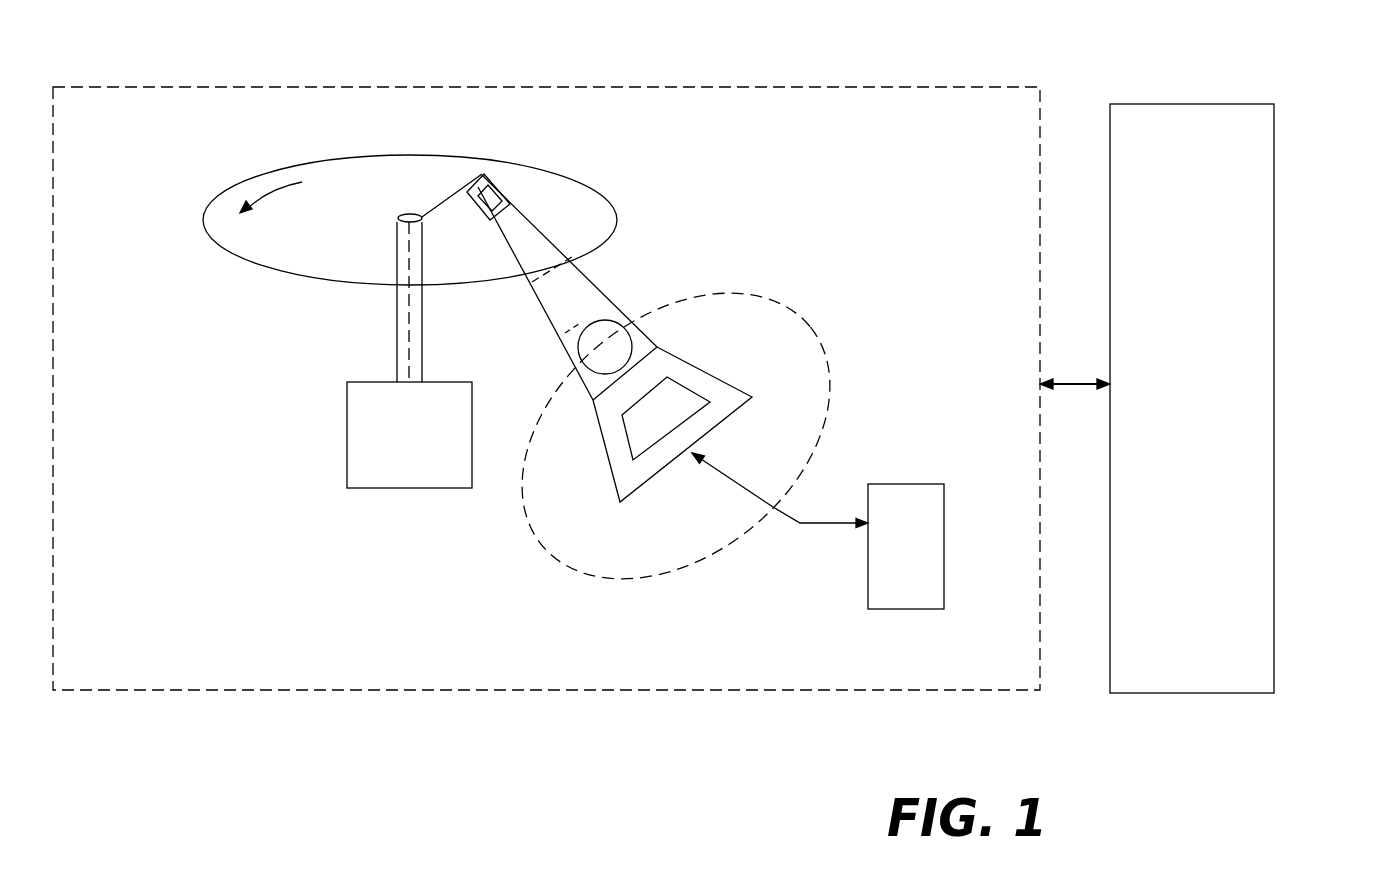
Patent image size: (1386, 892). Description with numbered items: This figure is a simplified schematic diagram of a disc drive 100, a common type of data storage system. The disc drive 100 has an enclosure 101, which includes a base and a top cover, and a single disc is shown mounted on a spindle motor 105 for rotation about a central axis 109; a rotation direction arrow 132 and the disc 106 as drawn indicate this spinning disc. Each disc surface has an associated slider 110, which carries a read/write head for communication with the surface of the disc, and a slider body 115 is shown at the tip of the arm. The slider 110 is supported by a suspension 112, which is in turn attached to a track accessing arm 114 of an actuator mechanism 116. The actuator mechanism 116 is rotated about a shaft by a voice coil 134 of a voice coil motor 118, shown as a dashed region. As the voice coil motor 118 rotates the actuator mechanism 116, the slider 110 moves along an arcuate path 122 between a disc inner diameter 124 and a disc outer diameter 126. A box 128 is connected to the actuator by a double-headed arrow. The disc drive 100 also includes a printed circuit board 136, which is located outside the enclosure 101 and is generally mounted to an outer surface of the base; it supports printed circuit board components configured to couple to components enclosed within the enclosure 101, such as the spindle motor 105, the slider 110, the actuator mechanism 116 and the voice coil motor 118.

The disc drive 100 is at (1192, 40).
The enclosure 101 is at (648, 690).
The spindle motor 105 is at (357, 463).
The disk 106 is at (225, 230).
The central axis 109 is at (407, 298).
The slider 110 is at (490, 202).
The suspension 112 is at (528, 247).
The track accessing arm 114 is at (572, 292).
The slider 115 is at (478, 187).
The actuator mechanism 116 is at (572, 342).
The voice coil motor 118 is at (625, 559).
The arcuate path 122 is at (424, 213).
The disc inner diameter 124 is at (403, 218).
The disc outer diameter 126 is at (560, 178).
The controller 128 is at (868, 578).
The rotation direction 132 is at (277, 188).
The voice coil 134 is at (614, 476).
The printed circuit board 136 is at (1274, 161).